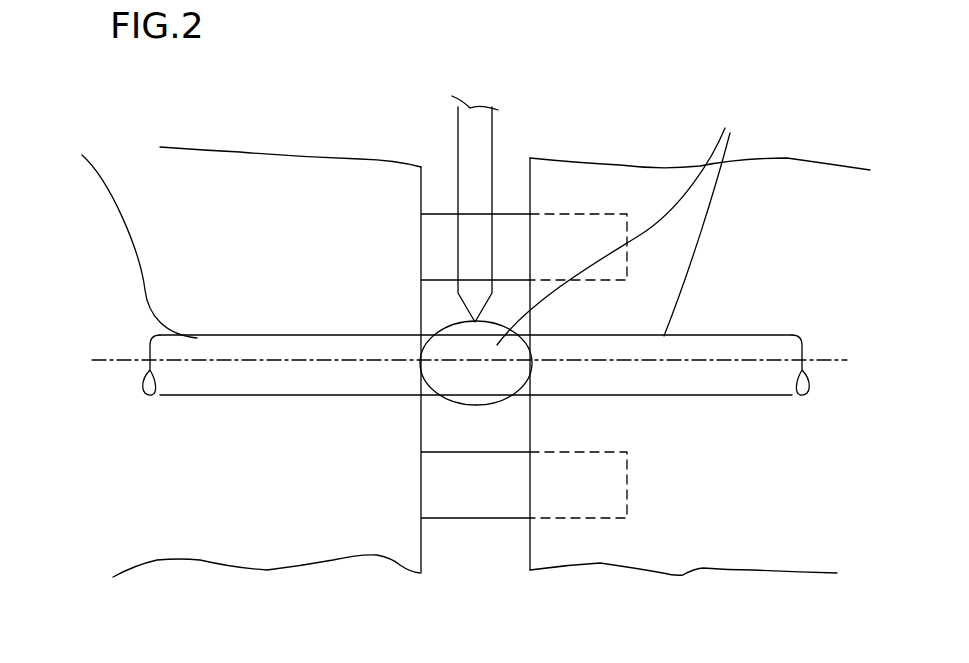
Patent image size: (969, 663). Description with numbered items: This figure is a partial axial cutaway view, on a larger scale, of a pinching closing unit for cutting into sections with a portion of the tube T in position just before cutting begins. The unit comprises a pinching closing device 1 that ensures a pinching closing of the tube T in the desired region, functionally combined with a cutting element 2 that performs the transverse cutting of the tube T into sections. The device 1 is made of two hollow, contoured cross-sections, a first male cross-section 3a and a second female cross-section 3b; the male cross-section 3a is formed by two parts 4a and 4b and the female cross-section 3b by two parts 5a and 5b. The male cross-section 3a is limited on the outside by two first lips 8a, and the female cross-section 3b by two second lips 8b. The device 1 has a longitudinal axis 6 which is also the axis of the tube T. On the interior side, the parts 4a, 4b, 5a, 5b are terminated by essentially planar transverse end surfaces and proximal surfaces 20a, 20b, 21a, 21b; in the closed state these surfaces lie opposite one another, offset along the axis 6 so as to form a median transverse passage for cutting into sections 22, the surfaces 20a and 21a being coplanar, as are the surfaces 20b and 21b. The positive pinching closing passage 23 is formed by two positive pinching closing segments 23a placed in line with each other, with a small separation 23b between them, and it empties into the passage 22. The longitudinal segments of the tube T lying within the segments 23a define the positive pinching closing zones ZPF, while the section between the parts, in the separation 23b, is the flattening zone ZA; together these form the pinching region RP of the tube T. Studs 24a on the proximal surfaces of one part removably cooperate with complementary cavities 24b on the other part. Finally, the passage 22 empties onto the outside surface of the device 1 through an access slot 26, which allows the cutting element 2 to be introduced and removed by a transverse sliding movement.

The pinching closing device 1 is at (645, 182).
The cutting element 2 is at (475, 120).
The first male cross-section 3a is at (660, 518).
The second female cross-section 3b is at (342, 233).
The part of the male cross-section 4a is at (228, 493).
The part of the male cross-section 4b is at (763, 473).
The part of the female cross-section 5a is at (178, 208).
The part of the female cross-section 5b is at (743, 203).
The longitudinal axis 6 is at (115, 360).
The first lips 8a is at (175, 533).
The second lips 8b is at (223, 170).
The transverse end surface and proximal surface 20a is at (420, 520).
The transverse end surface and proximal surface 20b is at (530, 533).
The transverse end surface and proximal surface 21a is at (420, 213).
The transverse end surface and proximal surface 21b is at (532, 213).
The passage for cutting into sections 22 is at (503, 217).
The positive pinching closing passage 23 is at (190, 395).
The positive pinching closing segments 23a is at (348, 335).
The separation 23b is at (498, 410).
The studs 24a is at (448, 217).
The cavities 24b is at (583, 217).
The access slot 26 is at (520, 197).
The pinching region RP is at (402, 223).
The tube T is at (252, 323).
The flattening zone ZA is at (468, 385).
The positive pinching closing zone ZPF is at (347, 387).